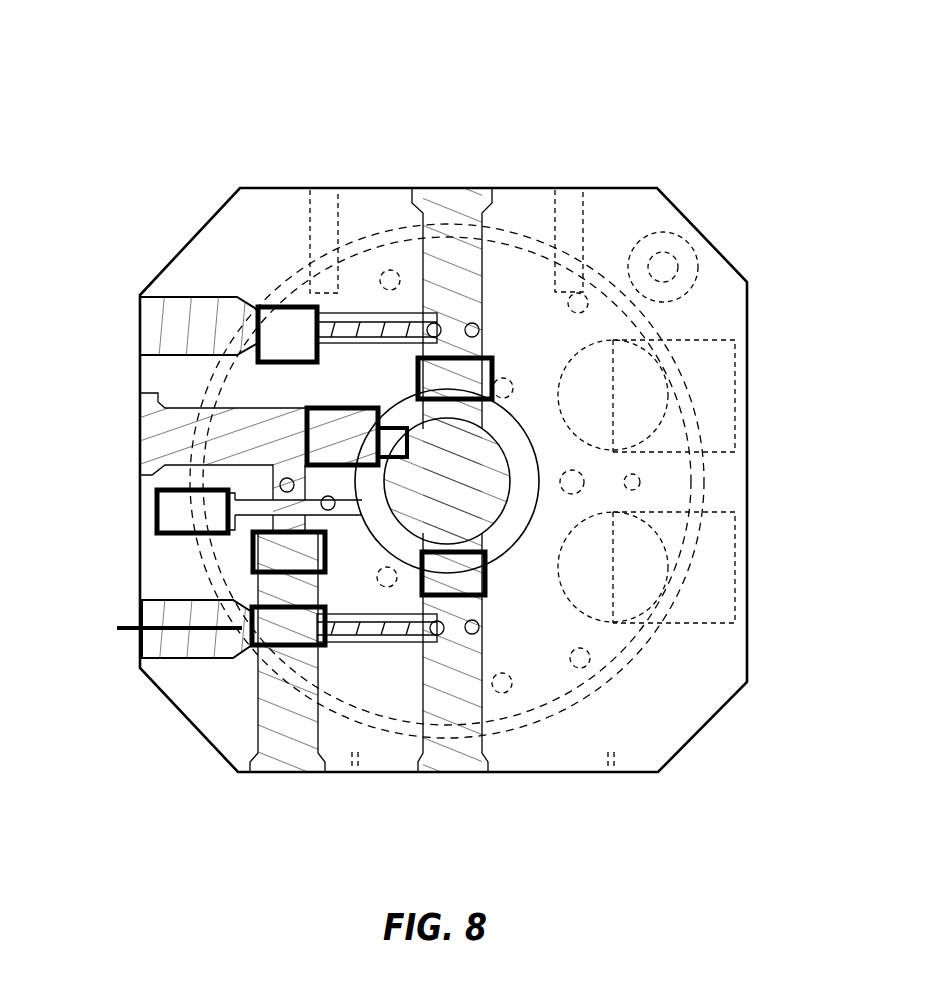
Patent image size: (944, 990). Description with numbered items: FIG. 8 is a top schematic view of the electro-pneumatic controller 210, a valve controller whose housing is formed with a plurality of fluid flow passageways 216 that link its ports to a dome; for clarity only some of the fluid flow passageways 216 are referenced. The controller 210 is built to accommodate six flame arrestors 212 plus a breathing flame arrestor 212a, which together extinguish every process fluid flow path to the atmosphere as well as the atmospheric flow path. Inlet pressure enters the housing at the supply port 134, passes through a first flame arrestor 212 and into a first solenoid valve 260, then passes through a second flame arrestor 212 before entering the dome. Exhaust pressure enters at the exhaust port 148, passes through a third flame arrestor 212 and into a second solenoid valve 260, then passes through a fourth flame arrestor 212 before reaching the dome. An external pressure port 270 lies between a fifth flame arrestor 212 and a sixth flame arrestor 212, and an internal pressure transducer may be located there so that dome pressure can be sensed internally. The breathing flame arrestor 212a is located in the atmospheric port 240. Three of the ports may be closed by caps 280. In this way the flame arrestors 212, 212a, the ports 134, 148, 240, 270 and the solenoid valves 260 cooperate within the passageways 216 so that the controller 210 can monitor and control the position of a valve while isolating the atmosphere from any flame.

The electro-pneumatic controller 210 is at (186, 68).
The flame arrestor 212 is at (443, 553).
The breathing flame arrestor 212a is at (172, 492).
The fluid flow passageways 216 is at (190, 405).
The exhaust port 148 is at (140, 328).
The supply port 134 is at (142, 648).
The atmospheric port 240 is at (157, 530).
The solenoid valve 260 is at (483, 327).
The external pressure port 270 is at (290, 773).
The caps 280 is at (457, 773).